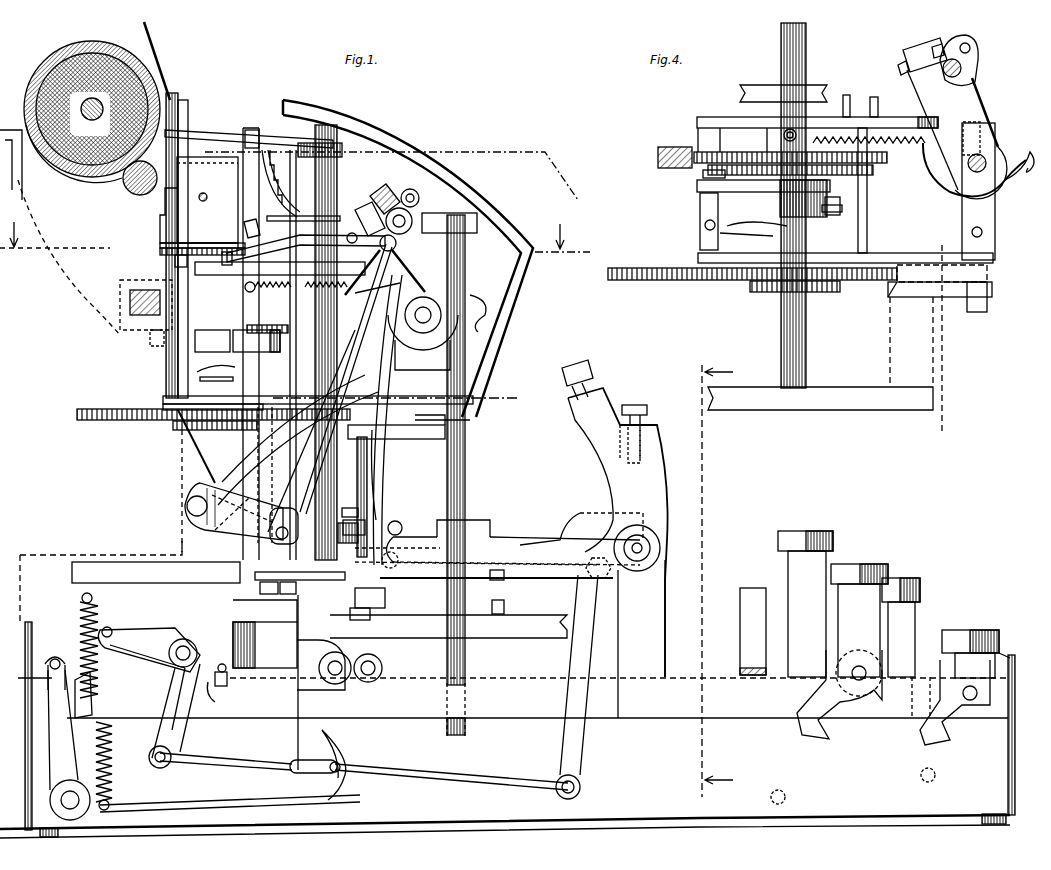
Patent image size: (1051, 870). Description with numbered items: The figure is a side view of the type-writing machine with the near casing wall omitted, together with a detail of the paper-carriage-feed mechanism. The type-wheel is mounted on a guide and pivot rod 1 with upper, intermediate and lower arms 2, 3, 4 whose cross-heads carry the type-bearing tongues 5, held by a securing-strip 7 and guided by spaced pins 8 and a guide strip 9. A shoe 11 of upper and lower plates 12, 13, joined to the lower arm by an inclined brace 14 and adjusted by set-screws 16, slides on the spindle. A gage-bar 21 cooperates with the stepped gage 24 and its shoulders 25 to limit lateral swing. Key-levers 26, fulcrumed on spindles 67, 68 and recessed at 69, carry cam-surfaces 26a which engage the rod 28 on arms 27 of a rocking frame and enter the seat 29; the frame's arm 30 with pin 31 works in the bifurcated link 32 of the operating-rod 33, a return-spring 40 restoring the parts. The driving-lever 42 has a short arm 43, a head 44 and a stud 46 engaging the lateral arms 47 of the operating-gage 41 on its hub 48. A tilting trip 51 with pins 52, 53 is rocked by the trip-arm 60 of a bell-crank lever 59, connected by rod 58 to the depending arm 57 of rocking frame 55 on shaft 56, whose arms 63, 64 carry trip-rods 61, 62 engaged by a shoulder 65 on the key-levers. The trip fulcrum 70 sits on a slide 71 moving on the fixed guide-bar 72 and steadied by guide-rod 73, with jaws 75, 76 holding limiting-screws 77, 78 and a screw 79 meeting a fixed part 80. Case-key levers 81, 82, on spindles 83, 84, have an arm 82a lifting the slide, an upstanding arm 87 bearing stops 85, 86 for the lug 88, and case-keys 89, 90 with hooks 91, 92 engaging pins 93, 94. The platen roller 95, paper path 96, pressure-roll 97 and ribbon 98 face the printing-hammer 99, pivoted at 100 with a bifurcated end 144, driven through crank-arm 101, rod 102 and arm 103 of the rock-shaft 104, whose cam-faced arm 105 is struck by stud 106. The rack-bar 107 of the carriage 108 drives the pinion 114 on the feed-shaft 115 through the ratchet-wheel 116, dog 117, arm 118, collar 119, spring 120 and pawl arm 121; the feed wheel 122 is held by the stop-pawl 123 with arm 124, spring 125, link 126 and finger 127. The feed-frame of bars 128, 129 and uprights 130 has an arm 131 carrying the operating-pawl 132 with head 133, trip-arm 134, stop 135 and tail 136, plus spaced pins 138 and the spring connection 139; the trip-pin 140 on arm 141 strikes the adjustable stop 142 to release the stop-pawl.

In FIG. 1, the guide and pivot rod 1 is at (316, 352).
In FIG. 1, the upper arm 2 is at (384, 190).
In FIG. 1, the intermediate arm 3 is at (455, 516).
In FIG. 1, the lower arm 4 is at (318, 392).
In FIG. 1, the type-bearing tongues 5 is at (189, 112).
In FIG. 1, the securing-strip 7 is at (164, 396).
In FIG. 1, the spaced pins 8 is at (162, 252).
In FIG. 1, the holding or guide strip 9 is at (175, 262).
In FIG. 1, the shoe 11 is at (282, 594).
In FIG. 1, the upper plate 12 is at (268, 555).
In FIG. 1, the lower plate 13 is at (256, 577).
In FIG. 1, the inclined brace 14 is at (186, 426).
In FIG. 1, the set-screws 16 is at (257, 594).
In FIG. 1, the gage or limiting bar 21 is at (247, 134).
In FIG. 1, the stepped gage 24 is at (207, 200).
In FIG. 1, the steps or shoulders 25 is at (168, 206).
In FIG. 1, the key-levers 26 is at (935, 615).
In FIG. 1, the cam-surfaces 26a is at (32, 677).
In FIG. 1, the arms of rocking frame 27 is at (69, 745).
In FIG. 1, the transverse rod 28 is at (55, 653).
In FIG. 1, the vertical slot or parallel-sided seat 29 is at (80, 702).
In FIG. 1, the forwardly-extending arm 30 is at (262, 797).
In FIG. 1, the terminal pin 31 is at (345, 766).
In FIG. 1, the bifurcated link 32 is at (327, 765).
In FIG. 1, the vertical operating-rod 33 is at (300, 737).
In FIG. 1, the return-spring 40 is at (108, 737).
In FIG. 1, the operating-gage 41 is at (277, 150).
In FIG. 1, the driving-lever 42 is at (390, 388).
In FIG. 1, the short arm 43 is at (265, 645).
In FIG. 1, the head 44 is at (306, 248).
In FIG. 1, the stud 46 is at (244, 231).
In FIG. 1, the lateral arms 47 is at (301, 355).
In FIG. 1, the hub or sleeve 48 is at (340, 158).
In FIG. 1, the tilting trip 51 is at (397, 522).
In FIG. 1, the pin 52 is at (397, 558).
In FIG. 1, the pin 53 is at (477, 569).
In FIG. 1, the rocking frame 55 is at (149, 637).
In FIG. 1, the shaft 56 is at (166, 668).
In FIG. 1, the depending arm 57 is at (177, 699).
In FIG. 1, the rod 58 is at (220, 760).
In FIG. 1, the bell-crank lever 59 is at (580, 750).
In FIG. 1, the trip-arm 60 is at (516, 538).
In FIG. 1, the trip-rod 61 is at (220, 680).
In FIG. 1, the trip-rod 62 is at (110, 627).
In FIG. 1, the arm 63 is at (198, 652).
In FIG. 1, the arm 64 is at (147, 649).
In FIG. 1, the shoulder 65 is at (216, 699).
In FIG. 1, the horizontal spindle 67 is at (384, 667).
In FIG. 1, the horizontal spindle 68 is at (334, 662).
In FIG. 1, the recess 69 is at (321, 669).
In FIG. 1, the fulcrum 70 is at (379, 500).
In FIG. 1, the slide 71 is at (476, 520).
In FIG. 1, the fixed guide-bar 72 is at (466, 461).
In FIG. 1, the auxiliary fixed guide-rod 73 is at (358, 470).
In FIG. 1, the upper limiting-jaw 75 is at (343, 526).
In FIG. 1, the lower limiting-jaw 76 is at (377, 602).
In FIG. 1, the upper limiting-screw 77 is at (348, 516).
In FIG. 1, the lower limiting-screw 78 is at (372, 620).
In FIG. 1, the screw 79 is at (506, 604).
In FIG. 1, the fixed part of the frame 80 is at (448, 626).
In FIG. 1, the case-key lever 81 is at (665, 618).
In FIG. 1, the case-key lever 82 is at (913, 697).
In FIG. 1, the arm 82a is at (496, 591).
In FIG. 1, the spindle 83 is at (652, 548).
In FIG. 1, the hollow spindle 84 is at (655, 535).
In FIG. 1, the adjustable stop 85 is at (645, 412).
In FIG. 1, the adjustable stop 86 is at (588, 373).
In FIG. 1, the upstanding arm 87 is at (618, 532).
In FIG. 1, the lug 88 is at (607, 513).
In FIG. 1, the case-key 89 is at (858, 568).
In FIG. 1, the case-key 90 is at (968, 632).
In FIG. 1, the locking tongue or hook 91 is at (820, 735).
In FIG. 1, the locking tongue or hook 92 is at (955, 738).
In FIG. 1, the fixed pin 93 is at (787, 793).
In FIG. 1, the fixed pin 94 is at (925, 783).
In FIG. 1, the roller 95 is at (44, 60).
In FIG. 1, the path of the paper 96 is at (152, 40).
In FIG. 1, the pressure-roll 97 is at (122, 186).
In FIG. 1, the ribbon 98 is at (171, 92).
In FIG. 1, the printing-hammer 99 is at (401, 140).
In FIG. 1, the pivot 100 is at (186, 506).
In FIG. 1, the crank-arm 101 is at (242, 512).
In FIG. 1, the rod 102 is at (342, 378).
In FIG. 1, the arm 103 is at (405, 256).
In FIG. 1, the rock-shaft 104 is at (412, 222).
In FIG. 4, the rock-shaft 104 is at (968, 80).
In FIG. 1, the cam-faced operating-arm 105 is at (371, 201).
In FIG. 1, the lateral stud 106 is at (352, 232).
In FIG. 1, the rack-bar 107 is at (130, 283).
In FIG. 4, the rack-bar 107 is at (668, 147).
In FIG. 1, the carriage 108 is at (60, 232).
In FIG. 1, the pinion 114 is at (212, 341).
In FIG. 4, the pinion 114 is at (790, 151).
In FIG. 4, the feed-shaft 115 is at (807, 241).
In FIG. 1, the ratchet-wheel 116 is at (247, 329).
In FIG. 4, the ratchet-wheel 116 is at (780, 200).
In FIG. 4, the dog 117 is at (703, 176).
In FIG. 4, the arm 118 is at (700, 194).
In FIG. 1, the collar 119 is at (256, 341).
In FIG. 4, the collar 119 is at (830, 214).
In FIG. 1, the spring 120 is at (216, 363).
In FIG. 4, the spring 120 is at (757, 217).
In FIG. 1, the arm of the pawl 121 is at (225, 385).
In FIG. 4, the arm of the pawl 121 is at (739, 235).
In FIG. 1, the feed wheel 122 is at (97, 423).
In FIG. 4, the feed wheel 122 is at (633, 281).
In FIG. 1, the stop-pawl 123 is at (425, 366).
In FIG. 4, the stop-pawl 123 is at (995, 212).
In FIG. 1, the upwardly-extending arm 124 is at (440, 265).
In FIG. 4, the upwardly-extending arm 124 is at (963, 117).
In FIG. 1, the spring 125 is at (378, 290).
In FIG. 4, the spring 125 is at (905, 153).
In FIG. 1, the link 126 is at (428, 335).
In FIG. 4, the link 126 is at (946, 195).
In FIG. 1, the forwardly-extending finger 127 is at (478, 278).
In FIG. 4, the forwardly-extending finger 127 is at (1022, 155).
In FIG. 1, the upper bar 128 is at (216, 276).
In FIG. 4, the upper bar 128 is at (726, 119).
In FIG. 1, the lower bar 129 is at (213, 430).
In FIG. 4, the lower bar 129 is at (866, 258).
In FIG. 4, the uprights 130 is at (700, 246).
In FIG. 4, the arm 131 is at (845, 250).
In FIG. 4, the operating-pawl 132 is at (990, 273).
In FIG. 1, the head 133 is at (346, 399).
In FIG. 4, the head 133 is at (897, 295).
In FIG. 1, the trip-arm 134 is at (416, 440).
In FIG. 4, the trip-arm 134 is at (972, 302).
In FIG. 4, the adjustable stop 135 is at (912, 300).
In FIG. 1, the tail 136 is at (470, 422).
In FIG. 4, the spaced pins 138 is at (847, 95).
In FIG. 1, the spring connection 139 is at (289, 284).
In FIG. 4, the spring connection 139 is at (796, 130).
In FIG. 1, the trip-pin 140 is at (412, 197).
In FIG. 4, the trip-pin 140 is at (972, 46).
In FIG. 4, the arm 141 is at (965, 66).
In FIG. 1, the adjustable stop 142 is at (384, 190).
In FIG. 4, the adjustable stop 142 is at (937, 42).
In FIG. 1, the bifurcated lower end 144 is at (258, 450).